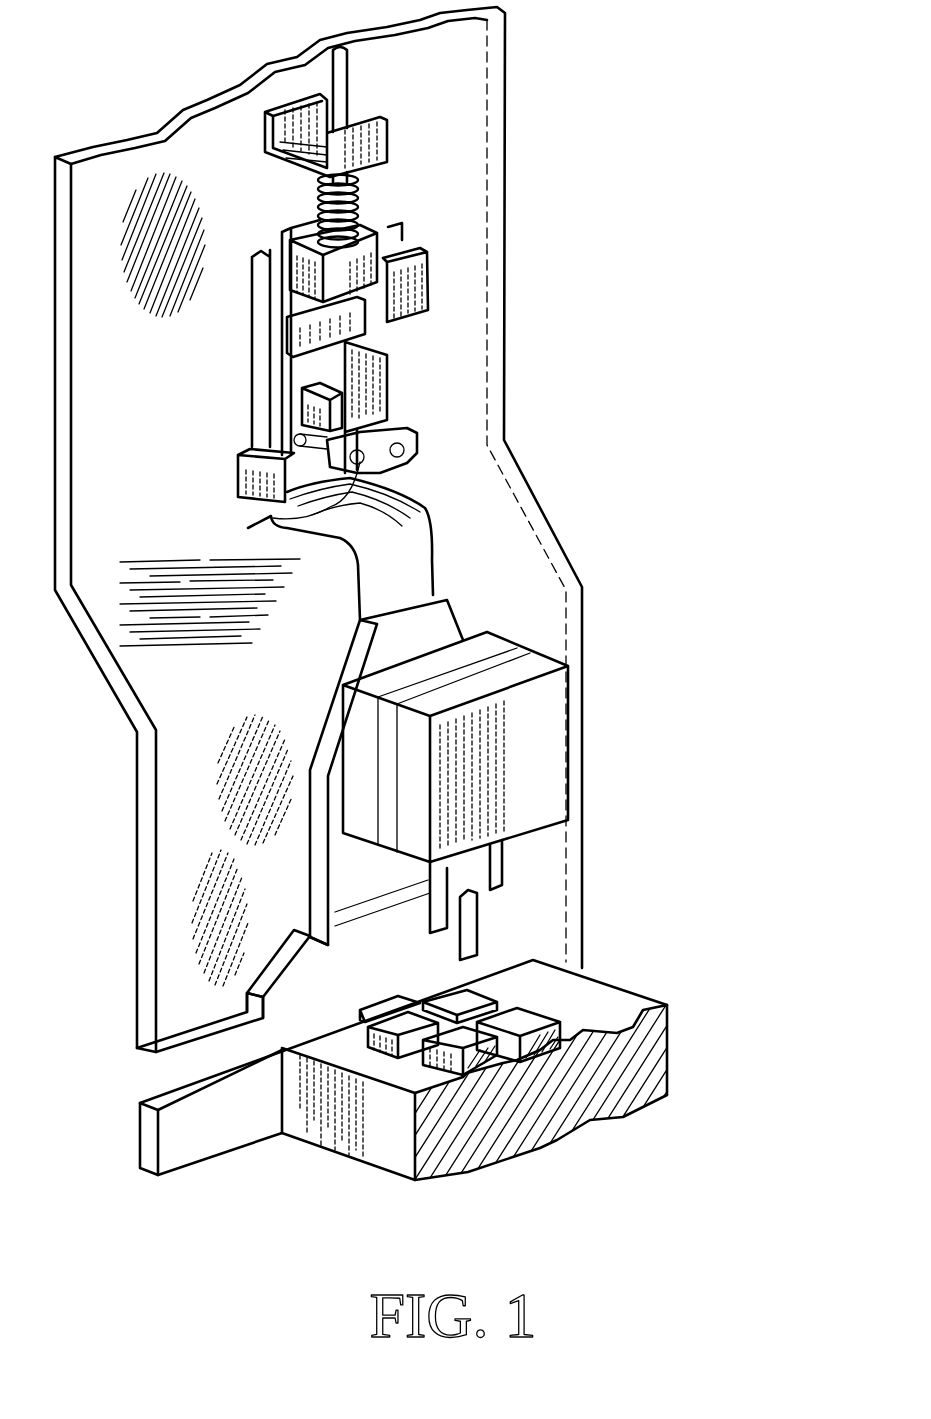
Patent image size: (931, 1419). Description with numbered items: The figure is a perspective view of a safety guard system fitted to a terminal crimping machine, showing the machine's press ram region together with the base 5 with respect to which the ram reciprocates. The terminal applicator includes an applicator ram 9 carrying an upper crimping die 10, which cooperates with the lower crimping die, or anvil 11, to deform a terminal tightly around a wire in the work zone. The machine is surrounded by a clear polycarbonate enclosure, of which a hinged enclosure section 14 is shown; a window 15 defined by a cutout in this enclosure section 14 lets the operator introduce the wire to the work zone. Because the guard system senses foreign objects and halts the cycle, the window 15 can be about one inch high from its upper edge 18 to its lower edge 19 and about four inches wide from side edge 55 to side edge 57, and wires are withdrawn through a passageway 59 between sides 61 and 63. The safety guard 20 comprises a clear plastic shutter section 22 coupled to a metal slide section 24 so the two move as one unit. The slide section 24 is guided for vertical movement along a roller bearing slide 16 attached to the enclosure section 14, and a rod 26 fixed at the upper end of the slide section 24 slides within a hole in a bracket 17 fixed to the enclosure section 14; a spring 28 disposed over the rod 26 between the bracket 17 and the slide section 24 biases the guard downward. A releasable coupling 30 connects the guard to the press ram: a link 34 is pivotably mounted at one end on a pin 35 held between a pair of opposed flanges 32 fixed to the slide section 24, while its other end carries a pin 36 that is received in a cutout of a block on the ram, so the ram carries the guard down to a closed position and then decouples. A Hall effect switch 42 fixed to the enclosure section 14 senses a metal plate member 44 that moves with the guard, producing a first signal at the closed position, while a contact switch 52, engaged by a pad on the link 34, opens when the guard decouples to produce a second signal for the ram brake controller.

The base 5 is at (630, 1002).
The applicator ram 9 is at (537, 755).
The upper crimping die 10 is at (487, 902).
The anvil 11 is at (527, 1017).
The enclosure section 14 is at (150, 810).
The window 15 is at (450, 990).
The roller bearing slide 16 is at (257, 385).
The bracket 17 is at (290, 163).
The upper edge 18 is at (312, 950).
The lower edge 19 is at (393, 998).
The safety guard 20 is at (407, 570).
The shutter section 22 is at (325, 853).
The slide section 24 is at (274, 422).
The rod 26 is at (342, 72).
The spring 28 is at (357, 200).
The releasable coupling 30 is at (447, 418).
The opposed flanges 32 is at (387, 372).
The link 34 is at (410, 460).
The pin 35 is at (280, 463).
The pin 36 is at (273, 526).
The Hall effect switch 42 is at (420, 280).
The plate member 44 is at (397, 237).
The contact switch 52 is at (310, 402).
The side edge 55 is at (467, 940).
The side edge 57 is at (268, 1004).
The passageway 59 is at (187, 1062).
The side 61 is at (172, 1043).
The side 63 is at (158, 1100).